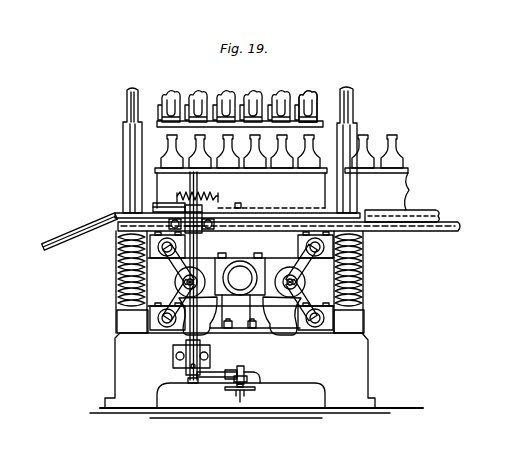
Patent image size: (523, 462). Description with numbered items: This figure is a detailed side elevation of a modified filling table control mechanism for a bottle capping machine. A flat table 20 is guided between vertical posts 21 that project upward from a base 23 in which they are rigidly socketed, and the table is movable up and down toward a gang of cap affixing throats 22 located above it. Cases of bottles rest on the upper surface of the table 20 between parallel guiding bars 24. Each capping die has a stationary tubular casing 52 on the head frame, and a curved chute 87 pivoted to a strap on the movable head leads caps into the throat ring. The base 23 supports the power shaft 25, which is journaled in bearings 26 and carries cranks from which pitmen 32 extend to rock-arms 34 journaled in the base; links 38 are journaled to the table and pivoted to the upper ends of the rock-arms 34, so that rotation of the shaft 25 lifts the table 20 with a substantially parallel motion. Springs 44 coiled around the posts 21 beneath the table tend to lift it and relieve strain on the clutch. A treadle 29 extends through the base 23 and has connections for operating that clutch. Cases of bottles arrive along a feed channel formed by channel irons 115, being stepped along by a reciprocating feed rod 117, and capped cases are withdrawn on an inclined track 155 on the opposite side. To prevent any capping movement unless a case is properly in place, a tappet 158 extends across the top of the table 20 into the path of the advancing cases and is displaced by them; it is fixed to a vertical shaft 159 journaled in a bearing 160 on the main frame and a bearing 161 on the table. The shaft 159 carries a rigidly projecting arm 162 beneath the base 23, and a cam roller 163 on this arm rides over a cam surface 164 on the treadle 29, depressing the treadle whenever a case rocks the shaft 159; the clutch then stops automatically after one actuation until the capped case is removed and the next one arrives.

The posts 21 is at (124, 136).
The tubular casing 52 is at (256, 90).
The curved chute 87 is at (318, 74).
The cap affixing throats 22 is at (166, 135).
The guiding bars 24 is at (301, 208).
The channel irons 115 is at (436, 213).
The feed rod 117 is at (455, 232).
The inclined track 155 is at (84, 232).
The tappet 158 is at (156, 203).
The bearing 161 is at (220, 246).
The vertical shaft 159 is at (190, 180).
The bearing 160 is at (209, 353).
The springs 44 is at (122, 268).
The table 20 is at (290, 223).
The pitmen 32 is at (203, 262).
The links 38 is at (172, 275).
The rock-arms 34 is at (175, 302).
The power shaft 25 is at (240, 274).
The bearings 26 is at (240, 315).
The base 23 is at (256, 375).
The arm 162 is at (224, 380).
The cam roller 163 is at (244, 370).
The cam surface 164 is at (253, 390).
The treadle 29 is at (237, 396).